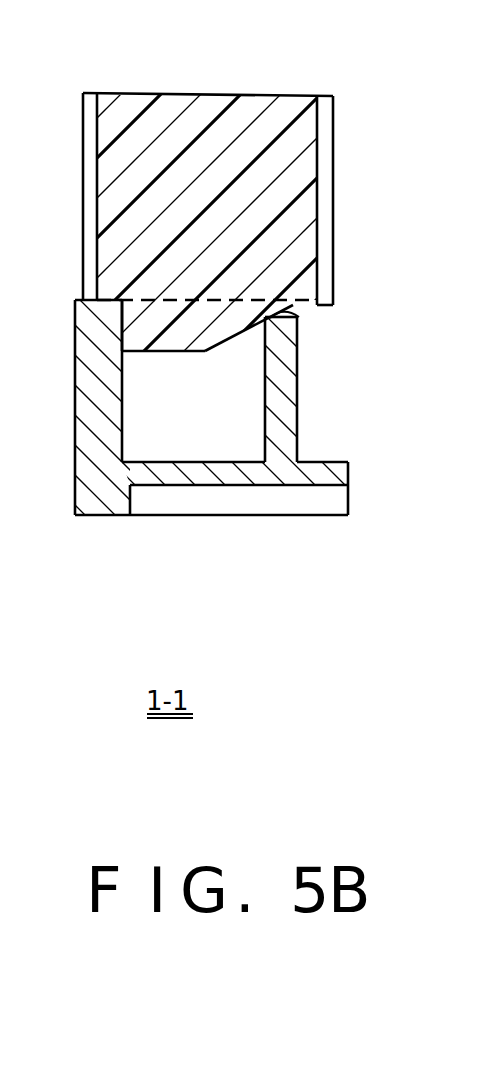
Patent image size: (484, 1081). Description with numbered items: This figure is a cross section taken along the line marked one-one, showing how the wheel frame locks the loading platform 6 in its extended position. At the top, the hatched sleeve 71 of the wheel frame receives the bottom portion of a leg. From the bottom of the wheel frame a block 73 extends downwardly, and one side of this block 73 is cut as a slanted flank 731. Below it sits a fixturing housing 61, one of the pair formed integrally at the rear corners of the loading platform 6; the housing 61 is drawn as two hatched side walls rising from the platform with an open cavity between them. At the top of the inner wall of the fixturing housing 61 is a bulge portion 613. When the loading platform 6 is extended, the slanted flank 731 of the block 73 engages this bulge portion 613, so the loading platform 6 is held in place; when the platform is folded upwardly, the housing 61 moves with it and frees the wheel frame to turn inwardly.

The sleeve 71 is at (320, 97).
The block 73 is at (172, 340).
The slanted flank 731 is at (297, 318).
The bulge portion 613 is at (322, 326).
The loading platform 6 is at (225, 439).
The fixturing housing 61 is at (93, 405).